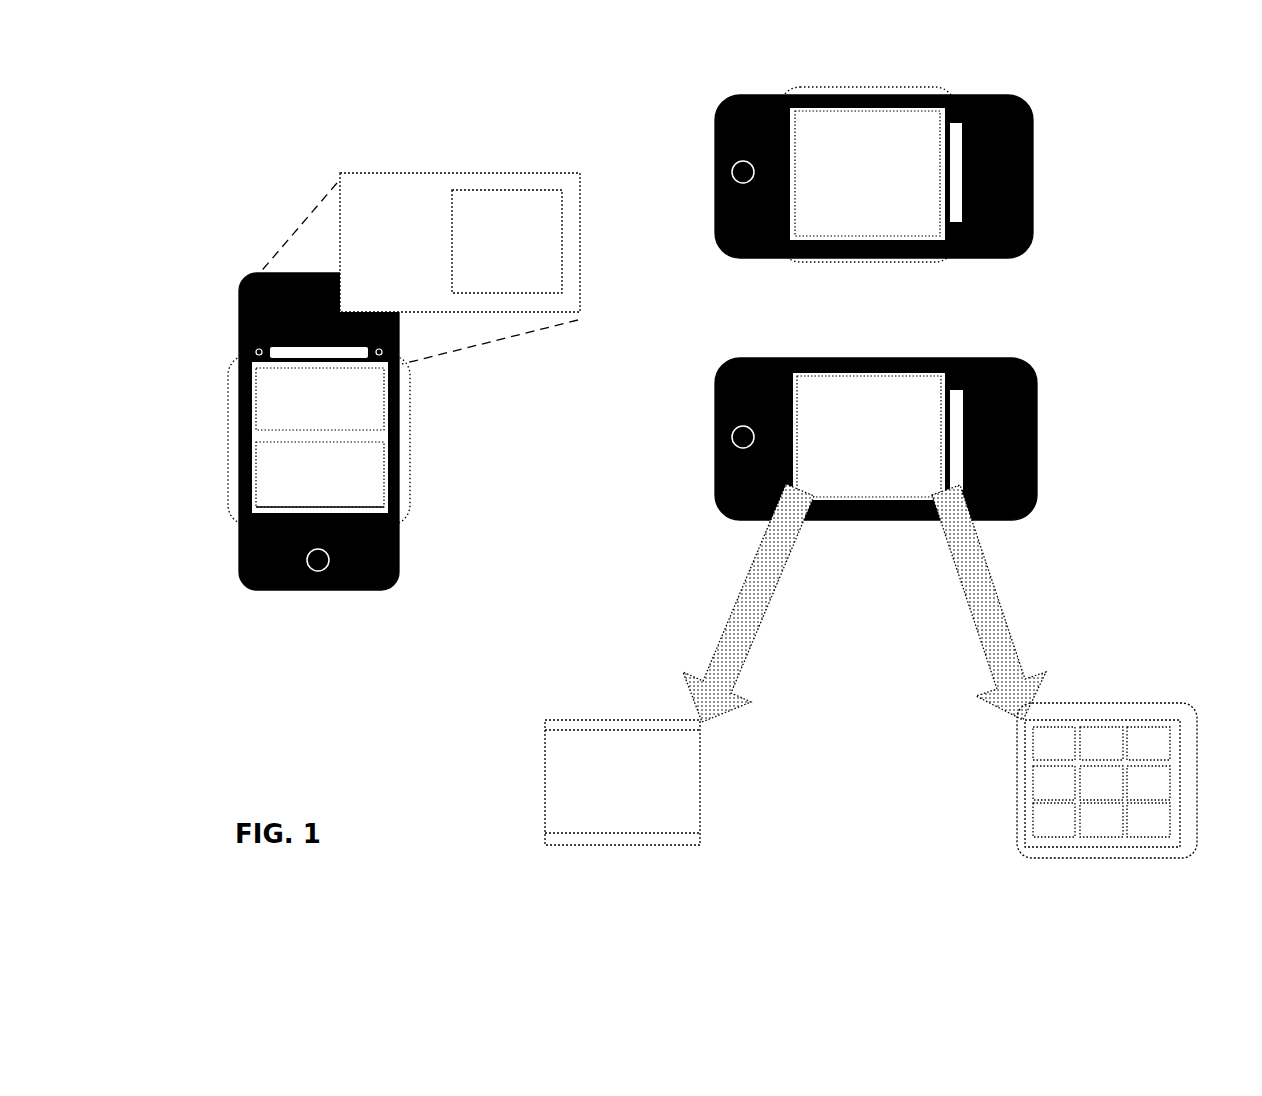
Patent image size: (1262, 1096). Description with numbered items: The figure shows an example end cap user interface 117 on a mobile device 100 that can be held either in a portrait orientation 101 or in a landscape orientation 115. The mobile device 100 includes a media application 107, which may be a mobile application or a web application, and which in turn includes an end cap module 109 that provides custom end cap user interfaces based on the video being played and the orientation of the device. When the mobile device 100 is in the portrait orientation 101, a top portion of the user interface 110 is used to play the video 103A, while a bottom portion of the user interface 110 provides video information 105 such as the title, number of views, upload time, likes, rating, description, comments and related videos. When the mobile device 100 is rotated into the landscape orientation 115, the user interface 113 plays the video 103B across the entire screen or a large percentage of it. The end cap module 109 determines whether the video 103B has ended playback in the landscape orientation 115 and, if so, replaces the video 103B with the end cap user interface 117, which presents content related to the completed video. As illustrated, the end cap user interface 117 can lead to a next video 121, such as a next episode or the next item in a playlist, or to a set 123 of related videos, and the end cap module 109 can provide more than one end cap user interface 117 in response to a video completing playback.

The mobile device 100 is at (238, 290).
The portrait orientation 101 is at (252, 587).
The video in portrait orientation 103A is at (366, 411).
The video in landscape orientation 103B is at (915, 186).
The video information 105 is at (303, 500).
The media application 107 is at (379, 282).
The end cap module 109 is at (491, 280).
The user interface in portrait orientation 110 is at (410, 512).
The user interface in landscape orientation 113 is at (938, 87).
The landscape orientation 115 is at (1035, 240).
The end cap user interface 117 is at (853, 476).
The next video 121 is at (607, 806).
The set of related videos 123 is at (1198, 850).